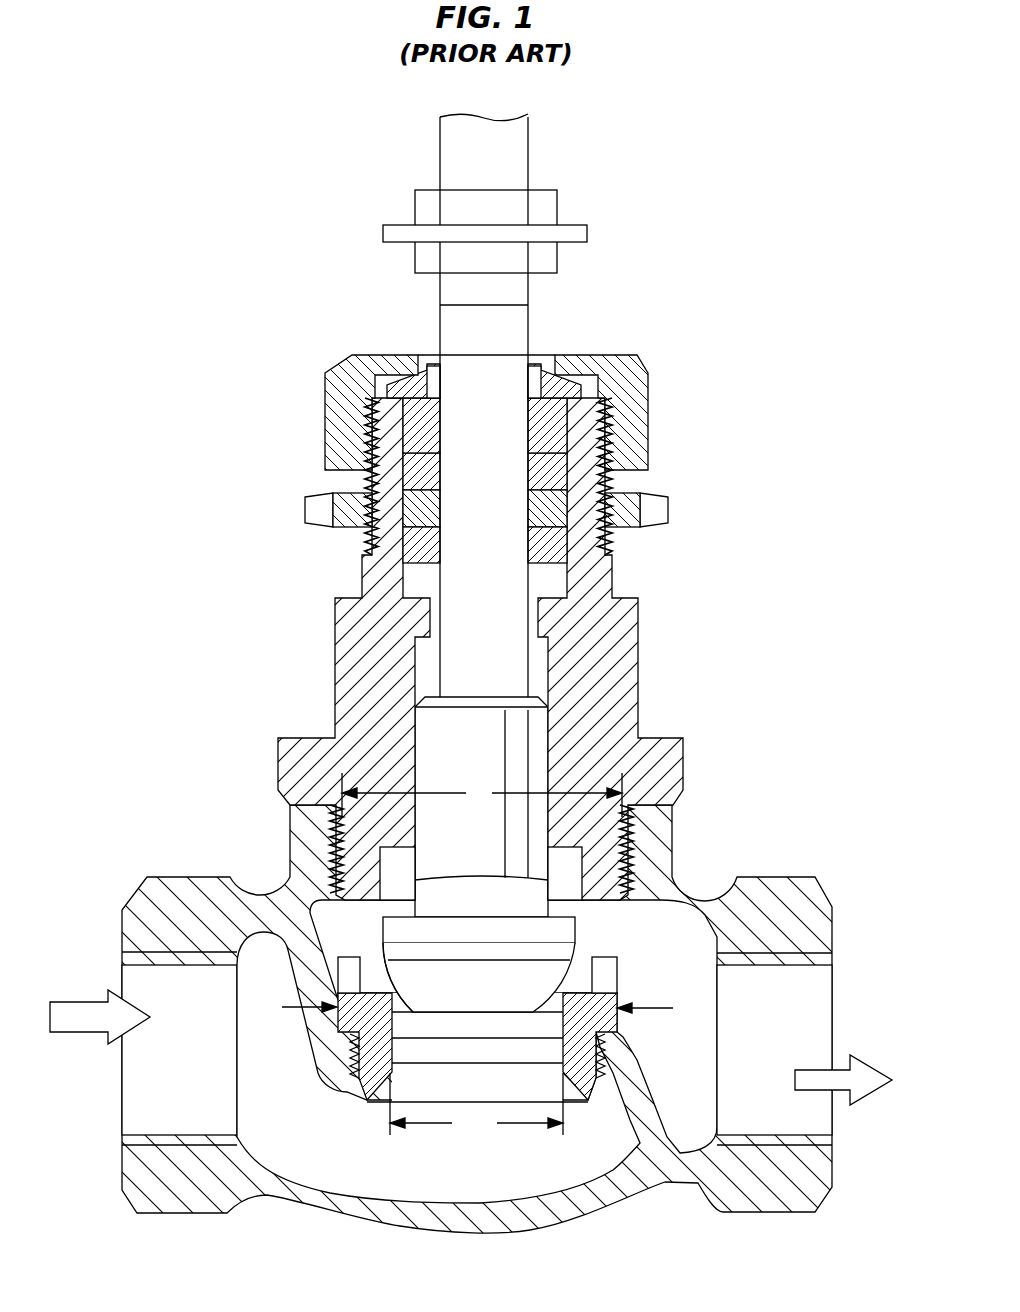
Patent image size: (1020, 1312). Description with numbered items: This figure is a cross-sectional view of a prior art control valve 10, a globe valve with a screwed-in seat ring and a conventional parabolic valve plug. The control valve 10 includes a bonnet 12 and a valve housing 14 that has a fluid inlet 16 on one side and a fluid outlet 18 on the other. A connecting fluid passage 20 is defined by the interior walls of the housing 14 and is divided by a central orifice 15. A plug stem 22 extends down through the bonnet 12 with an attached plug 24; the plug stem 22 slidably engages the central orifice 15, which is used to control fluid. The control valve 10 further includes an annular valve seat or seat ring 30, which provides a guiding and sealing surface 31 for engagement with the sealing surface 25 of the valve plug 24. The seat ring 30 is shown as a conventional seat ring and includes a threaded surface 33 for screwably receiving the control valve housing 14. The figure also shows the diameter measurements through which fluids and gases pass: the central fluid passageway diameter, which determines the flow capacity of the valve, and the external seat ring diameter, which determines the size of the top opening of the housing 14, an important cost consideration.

The control valve 10 is at (235, 508).
The bonnet 12 is at (665, 750).
The valve housing 14 is at (474, 1019).
The central orifice 15 is at (477, 1070).
The fluid inlet 16 is at (168, 1077).
The fluid outlet 18 is at (778, 1000).
The connecting fluid passage 20 is at (426, 1189).
The plug stem 22 is at (495, 583).
The plug 24 is at (489, 854).
The sealing surface 25 is at (387, 972).
The seat ring 30 is at (517, 1029).
The guiding and sealing surface 31 is at (557, 1013).
The threaded surface 33 is at (598, 1062).